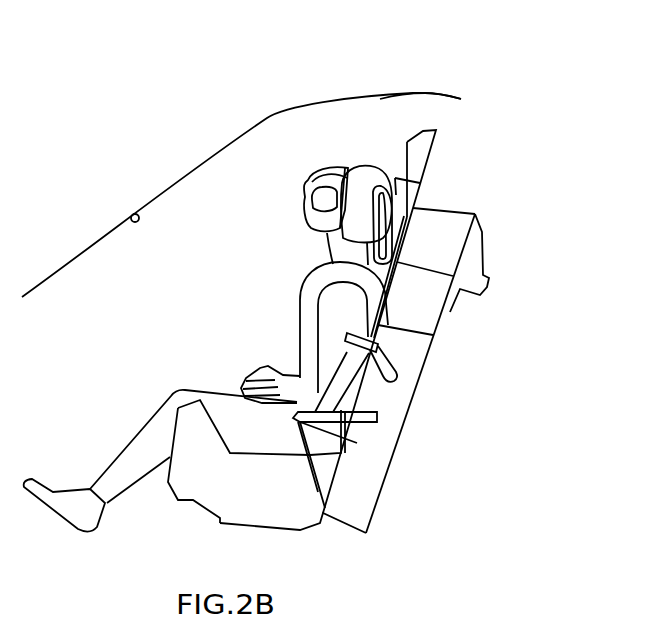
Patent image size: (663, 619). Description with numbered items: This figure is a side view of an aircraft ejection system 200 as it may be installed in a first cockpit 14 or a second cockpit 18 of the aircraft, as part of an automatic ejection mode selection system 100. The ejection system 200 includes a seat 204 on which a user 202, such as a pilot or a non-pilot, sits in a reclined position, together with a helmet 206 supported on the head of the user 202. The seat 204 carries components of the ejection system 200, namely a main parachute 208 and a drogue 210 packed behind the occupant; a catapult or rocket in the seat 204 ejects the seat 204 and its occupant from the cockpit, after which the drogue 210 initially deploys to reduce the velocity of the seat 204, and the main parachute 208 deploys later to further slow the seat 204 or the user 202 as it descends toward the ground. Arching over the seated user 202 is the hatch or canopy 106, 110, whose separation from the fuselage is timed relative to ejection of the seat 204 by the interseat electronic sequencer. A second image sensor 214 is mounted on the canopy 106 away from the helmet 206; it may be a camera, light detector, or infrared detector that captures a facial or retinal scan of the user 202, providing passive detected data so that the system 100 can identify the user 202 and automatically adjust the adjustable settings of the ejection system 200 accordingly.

The first cockpit 14 is at (241, 171).
The second cockpit 18 is at (262, 109).
The canopy 106 is at (460, 80).
The hatch or canopy 110 is at (433, 94).
The second image sensor 214 is at (136, 223).
The helmet 206 is at (368, 175).
The user 202 is at (293, 294).
The main parachute 208 is at (461, 232).
The drogue 210 is at (484, 273).
The ejection system 200 is at (440, 370).
The seat 204 is at (400, 434).
The automatic ejection mode selection system 100 is at (364, 331).